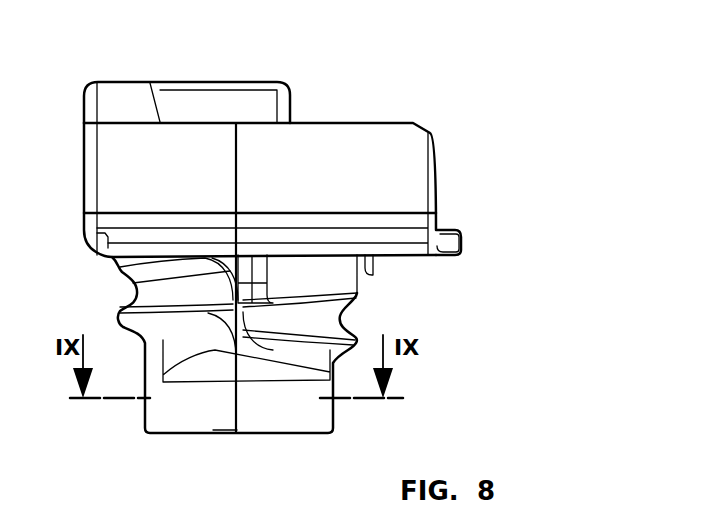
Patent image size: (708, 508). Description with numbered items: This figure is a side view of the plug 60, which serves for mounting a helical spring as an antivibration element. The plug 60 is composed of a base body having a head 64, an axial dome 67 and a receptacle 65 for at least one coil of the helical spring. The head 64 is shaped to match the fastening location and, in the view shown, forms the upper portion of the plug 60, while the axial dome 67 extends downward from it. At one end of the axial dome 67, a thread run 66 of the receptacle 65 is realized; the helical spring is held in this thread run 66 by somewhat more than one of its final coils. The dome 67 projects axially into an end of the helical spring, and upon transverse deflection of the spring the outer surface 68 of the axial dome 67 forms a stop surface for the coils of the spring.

The plug 60 is at (272, 257).
The head 64 is at (135, 192).
The receptacle 65 is at (92, 266).
The thread run 66 is at (153, 273).
The axial dome 67 is at (295, 405).
The outer surface 68 is at (218, 405).